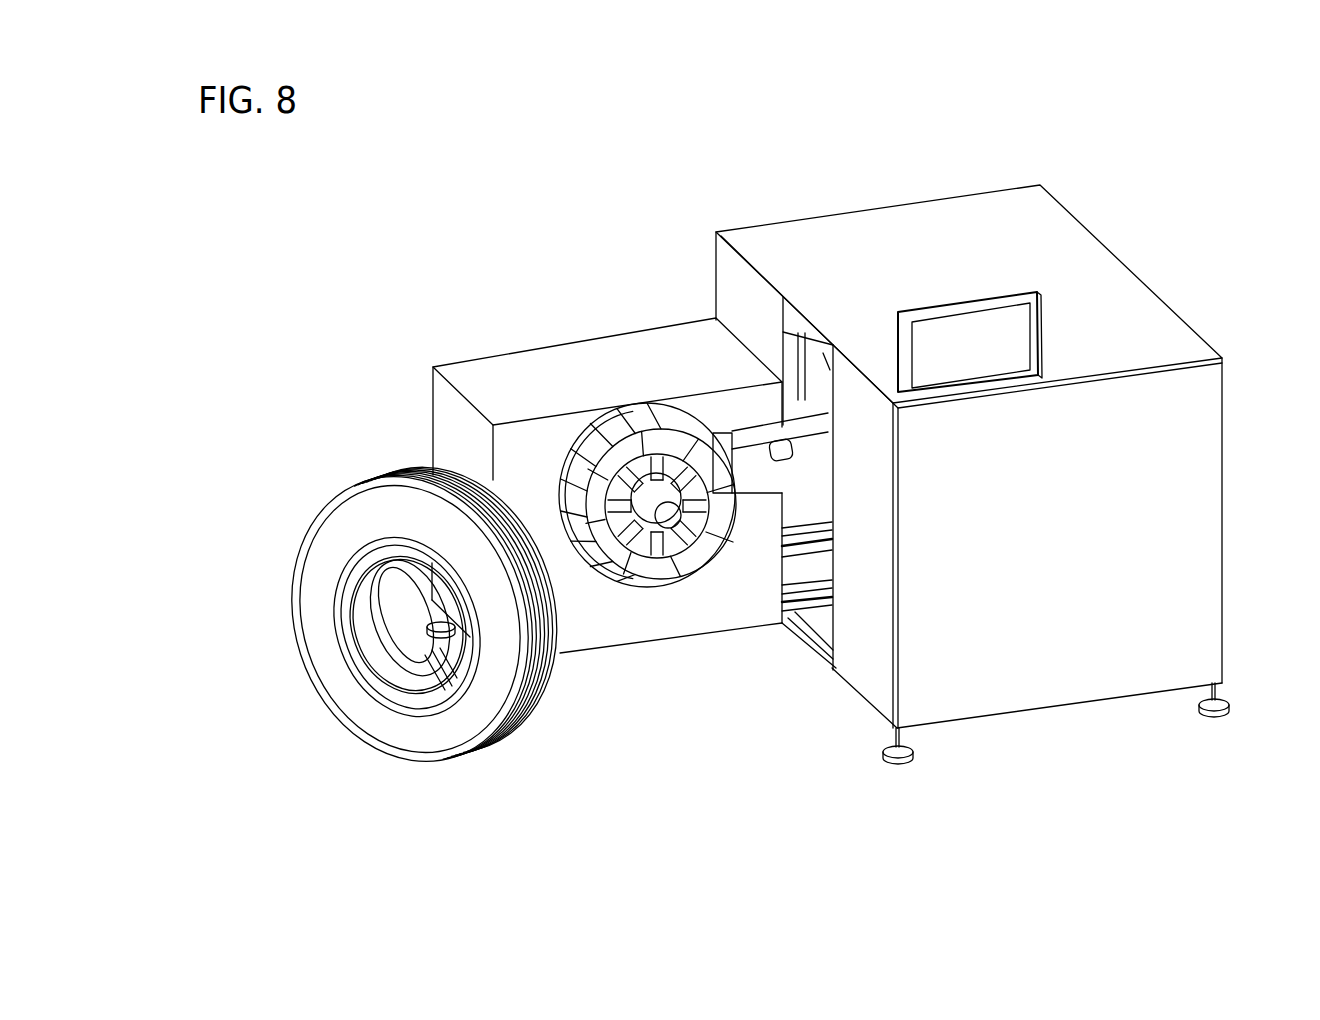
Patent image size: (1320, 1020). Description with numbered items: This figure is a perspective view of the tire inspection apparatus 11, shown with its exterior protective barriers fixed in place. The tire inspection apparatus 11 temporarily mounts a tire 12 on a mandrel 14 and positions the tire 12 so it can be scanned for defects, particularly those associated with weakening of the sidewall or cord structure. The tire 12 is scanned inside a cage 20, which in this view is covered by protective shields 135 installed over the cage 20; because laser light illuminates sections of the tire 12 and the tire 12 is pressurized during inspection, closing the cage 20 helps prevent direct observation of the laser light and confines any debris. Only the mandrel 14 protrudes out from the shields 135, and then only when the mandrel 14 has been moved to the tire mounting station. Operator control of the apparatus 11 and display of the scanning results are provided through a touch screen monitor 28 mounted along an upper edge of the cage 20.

The tire inspection apparatus 11 is at (314, 306).
The tire 12 is at (333, 535).
The mandrel 14 is at (610, 470).
The cage 20 is at (800, 642).
The touch screen monitor 28 is at (1010, 343).
The protective shields 135 is at (573, 362).